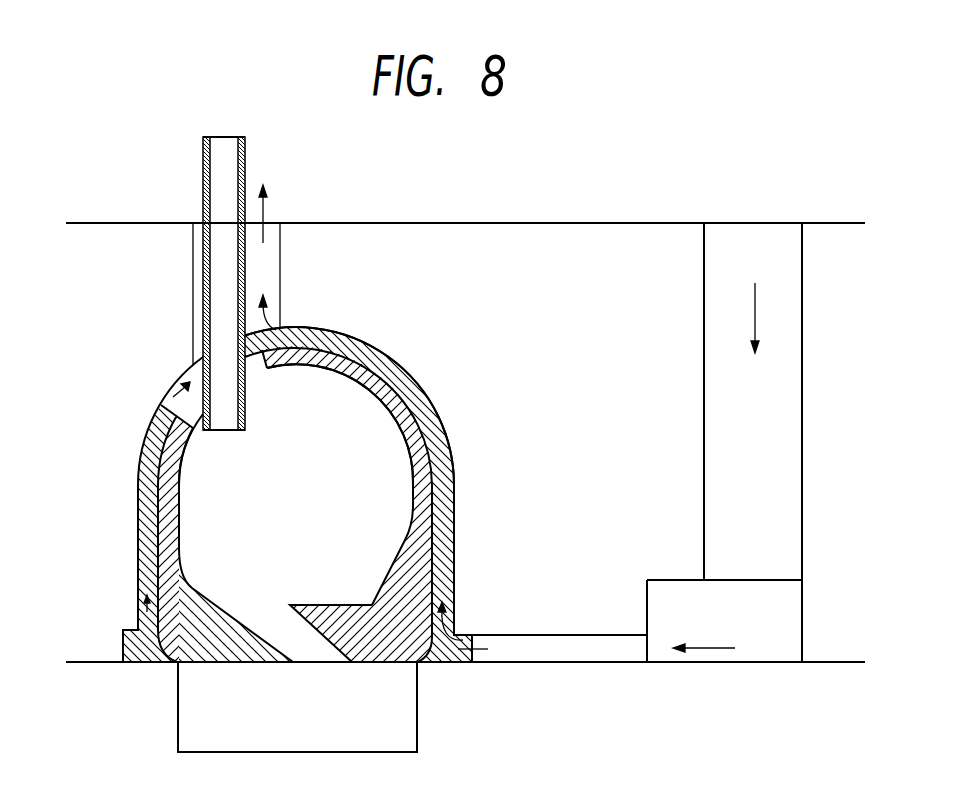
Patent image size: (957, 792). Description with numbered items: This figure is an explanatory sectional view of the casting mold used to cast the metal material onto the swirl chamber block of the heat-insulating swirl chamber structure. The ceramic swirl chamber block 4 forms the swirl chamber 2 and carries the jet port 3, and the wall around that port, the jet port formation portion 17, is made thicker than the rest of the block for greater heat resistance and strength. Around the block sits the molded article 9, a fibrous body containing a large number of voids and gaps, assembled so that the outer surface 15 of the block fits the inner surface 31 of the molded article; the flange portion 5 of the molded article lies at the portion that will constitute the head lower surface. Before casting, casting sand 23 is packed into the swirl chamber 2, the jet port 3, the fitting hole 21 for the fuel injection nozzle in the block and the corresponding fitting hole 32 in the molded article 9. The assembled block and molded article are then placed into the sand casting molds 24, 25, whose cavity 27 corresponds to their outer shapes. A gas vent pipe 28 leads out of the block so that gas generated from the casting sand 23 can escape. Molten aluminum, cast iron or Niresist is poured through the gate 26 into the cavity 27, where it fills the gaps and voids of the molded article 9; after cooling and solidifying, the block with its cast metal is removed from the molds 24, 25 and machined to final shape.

The swirl chamber 2 is at (312, 512).
The jet port 3 is at (287, 623).
The swirl chamber block 4 is at (417, 528).
The flange portion 5 is at (465, 635).
The molded article 9 is at (427, 400).
The outer surface 15 is at (400, 400).
The jet port formation portion 17 is at (209, 630).
The fitting hole 21 is at (267, 368).
The casting sand 23 is at (240, 512).
The casting mold 24 is at (135, 326).
The casting mold 25 is at (622, 727).
The gate 26 is at (707, 248).
The cavity 27 is at (140, 495).
The gas vent pipe 28 is at (247, 165).
The inner surface 31 is at (437, 470).
The fitting hole 32 is at (168, 392).